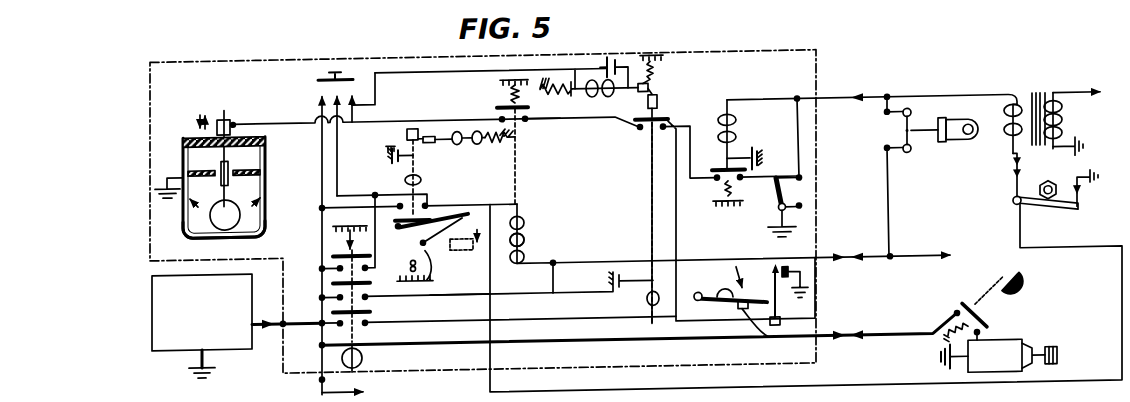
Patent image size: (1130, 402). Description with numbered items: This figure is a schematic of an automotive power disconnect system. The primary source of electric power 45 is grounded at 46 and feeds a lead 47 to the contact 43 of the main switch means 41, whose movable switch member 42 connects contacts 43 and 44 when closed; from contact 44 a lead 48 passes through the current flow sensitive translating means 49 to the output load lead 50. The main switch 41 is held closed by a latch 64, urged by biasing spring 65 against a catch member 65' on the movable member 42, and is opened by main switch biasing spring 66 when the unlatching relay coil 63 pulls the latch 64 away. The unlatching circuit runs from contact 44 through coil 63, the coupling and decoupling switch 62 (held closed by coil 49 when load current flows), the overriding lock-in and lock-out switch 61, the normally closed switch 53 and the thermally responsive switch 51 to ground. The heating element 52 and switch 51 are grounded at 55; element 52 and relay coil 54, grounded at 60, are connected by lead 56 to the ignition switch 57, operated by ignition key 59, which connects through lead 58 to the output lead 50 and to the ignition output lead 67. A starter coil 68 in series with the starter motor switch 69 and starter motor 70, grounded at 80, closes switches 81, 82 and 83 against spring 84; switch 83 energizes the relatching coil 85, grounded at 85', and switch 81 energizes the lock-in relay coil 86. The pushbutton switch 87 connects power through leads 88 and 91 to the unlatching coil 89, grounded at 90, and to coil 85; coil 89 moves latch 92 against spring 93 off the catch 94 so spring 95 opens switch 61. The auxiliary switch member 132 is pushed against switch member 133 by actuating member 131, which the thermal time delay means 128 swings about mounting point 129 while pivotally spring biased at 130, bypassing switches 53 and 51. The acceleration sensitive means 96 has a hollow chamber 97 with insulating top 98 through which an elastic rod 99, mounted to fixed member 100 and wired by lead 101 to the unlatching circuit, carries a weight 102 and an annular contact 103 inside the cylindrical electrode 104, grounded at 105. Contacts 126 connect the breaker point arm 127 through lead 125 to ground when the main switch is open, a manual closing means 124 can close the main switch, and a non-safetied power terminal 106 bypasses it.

The main switch means 41 is at (450, 202).
The movable switch member 42 is at (408, 227).
The electric contact 43 is at (377, 190).
The electric contact 44 is at (422, 180).
The primary source of electric power 45 is at (152, 298).
The ground 46 is at (195, 373).
The lead 47 is at (321, 315).
The lead 48 is at (524, 205).
The current flow sensitive electro-magnetic translating means 49 is at (538, 242).
The output load lead 50 is at (578, 262).
The thermally responsive switch means 51 is at (760, 208).
The electric heating element 52 is at (806, 182).
The normally closed switch 53 is at (708, 186).
The relay coil 54 is at (720, 112).
The ground 55 is at (797, 235).
The lead 56 is at (844, 101).
The ignition switch 57 is at (895, 100).
The lead 58 is at (889, 192).
The ignition key 59 is at (975, 120).
The ground 60 is at (751, 150).
The overriding lock-in and lock-out switch 61 is at (640, 133).
The coupling and decoupling switch 62 is at (502, 101).
The unlatching relay coil 63 is at (458, 128).
The latch 64 is at (415, 69).
The biasing spring 65 is at (513, 156).
The catch member 65' is at (399, 156).
The main switch biasing spring 66 is at (430, 293).
The ignition output lead 67 is at (937, 100).
The relay coil 68 is at (363, 355).
The starter motor switch 69 is at (995, 312).
The starter motor 70 is at (1030, 340).
The ground 80 is at (940, 364).
The switch 81 is at (372, 310).
The switch 82 is at (331, 281).
The switch 83 is at (331, 252).
The spring 84 is at (348, 237).
The relatching coil 85 is at (379, 159).
The ground 85' is at (376, 139).
The overriding lock-in and lock-out relay coil 86 is at (645, 300).
The pushbutton switch 87 is at (317, 70).
The lead 88 is at (375, 67).
The overriding lock-in and lock-out unlatching relay coil 89 is at (588, 119).
The ground 90 is at (604, 66).
The lead 91 is at (321, 162).
The latch 92 is at (649, 58).
The biasing spring 93 is at (548, 118).
The catch 94 is at (658, 100).
The biasing spring 95 is at (660, 71).
The acceleration sensitive means 96 is at (174, 143).
The hollow chamber 97 is at (187, 226).
The insulating top 98 is at (192, 130).
The elastic rod 99 is at (221, 106).
The fixed member 100 is at (236, 113).
The lead 101 is at (300, 120).
The weight 102 is at (225, 226).
The annular electrical contact member 103 is at (232, 170).
The cylindrical centrally apertured electrode 104 is at (183, 153).
The ground 105 is at (183, 205).
The non-safetied power terminal 106 is at (314, 378).
The manually operable overriding main switch closing means 124 is at (436, 248).
The lead 125 is at (928, 390).
The contacts 126 is at (405, 238).
The breaker point arm 127 is at (1014, 210).
The thermally responsive time delay means 128 is at (720, 289).
The mounting point 129 is at (697, 302).
The pivotal spring biased mounting 130 is at (766, 341).
The actuating member 131 is at (753, 277).
The movable switch member 132 is at (778, 308).
The switch member 133 is at (790, 268).